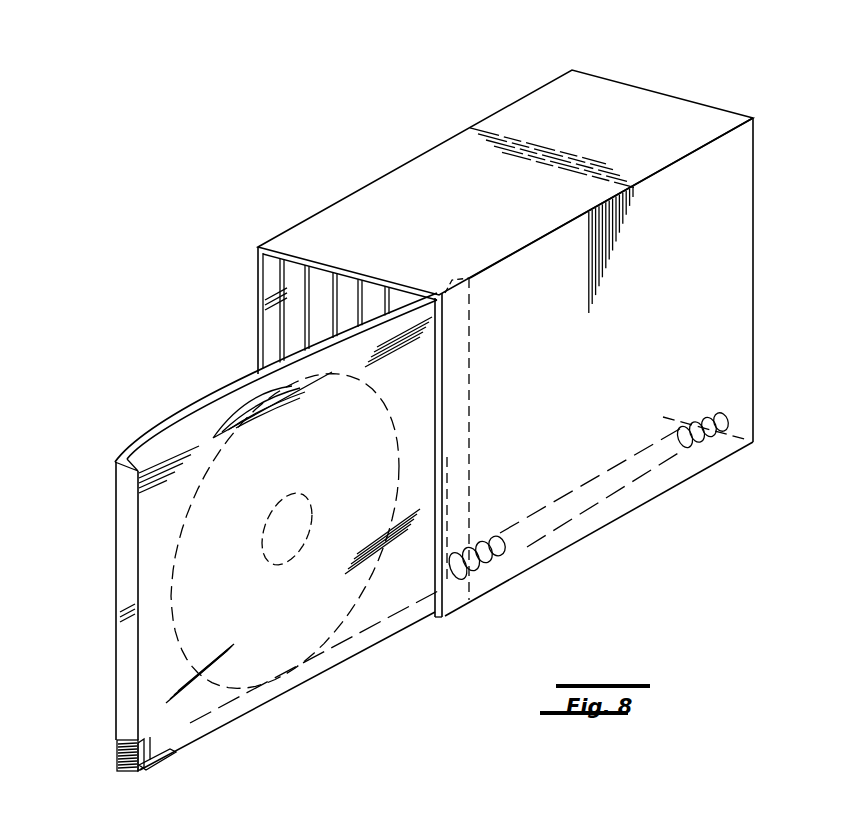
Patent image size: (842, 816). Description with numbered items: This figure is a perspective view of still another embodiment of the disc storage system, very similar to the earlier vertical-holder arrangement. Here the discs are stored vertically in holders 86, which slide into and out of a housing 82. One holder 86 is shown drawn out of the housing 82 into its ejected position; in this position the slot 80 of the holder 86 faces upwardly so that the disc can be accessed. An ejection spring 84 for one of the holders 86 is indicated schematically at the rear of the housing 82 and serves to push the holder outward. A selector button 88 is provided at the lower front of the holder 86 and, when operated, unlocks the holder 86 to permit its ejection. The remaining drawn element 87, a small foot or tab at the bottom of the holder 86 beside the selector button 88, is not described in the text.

The slot 80 is at (175, 440).
The housing 82 is at (373, 203).
The ejection spring 84 is at (717, 440).
The holder 86 is at (288, 304).
The latch foot 87 is at (146, 771).
The selector button 88 is at (120, 750).